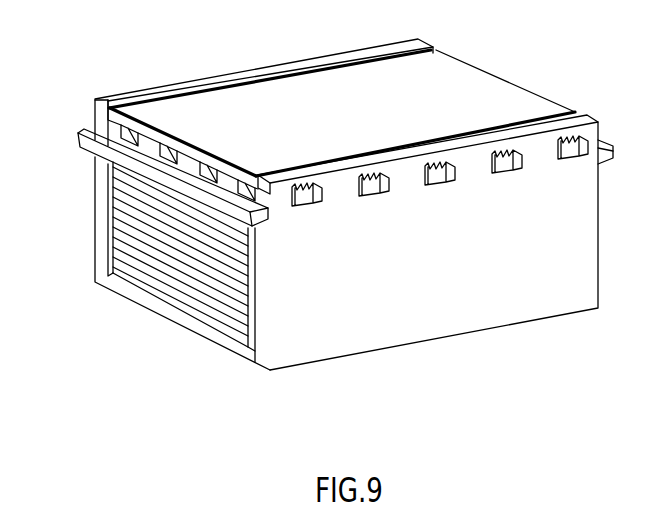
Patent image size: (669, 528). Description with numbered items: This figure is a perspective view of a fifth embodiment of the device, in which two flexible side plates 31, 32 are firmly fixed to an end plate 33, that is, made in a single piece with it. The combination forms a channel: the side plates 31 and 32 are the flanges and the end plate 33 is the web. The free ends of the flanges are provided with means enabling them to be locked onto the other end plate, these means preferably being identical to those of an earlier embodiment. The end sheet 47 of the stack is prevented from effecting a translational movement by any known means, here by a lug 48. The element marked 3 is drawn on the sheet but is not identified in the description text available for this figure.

The lid 3 is at (447, 85).
The end frame 31 is at (100, 193).
The right post of end frame 32 is at (263, 262).
The louvered panel 33 is at (180, 310).
The notched rail 47 is at (140, 152).
The cross bar 48 is at (92, 129).